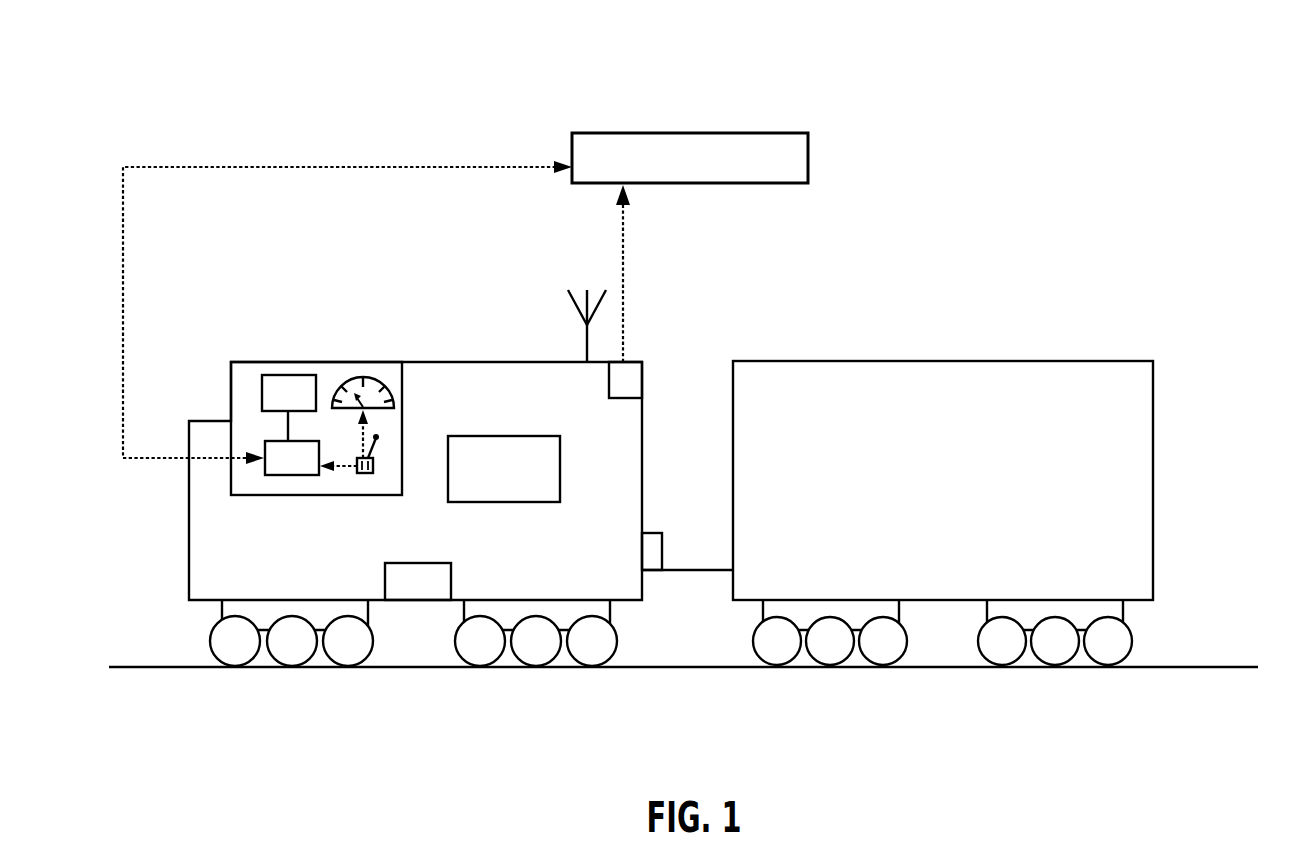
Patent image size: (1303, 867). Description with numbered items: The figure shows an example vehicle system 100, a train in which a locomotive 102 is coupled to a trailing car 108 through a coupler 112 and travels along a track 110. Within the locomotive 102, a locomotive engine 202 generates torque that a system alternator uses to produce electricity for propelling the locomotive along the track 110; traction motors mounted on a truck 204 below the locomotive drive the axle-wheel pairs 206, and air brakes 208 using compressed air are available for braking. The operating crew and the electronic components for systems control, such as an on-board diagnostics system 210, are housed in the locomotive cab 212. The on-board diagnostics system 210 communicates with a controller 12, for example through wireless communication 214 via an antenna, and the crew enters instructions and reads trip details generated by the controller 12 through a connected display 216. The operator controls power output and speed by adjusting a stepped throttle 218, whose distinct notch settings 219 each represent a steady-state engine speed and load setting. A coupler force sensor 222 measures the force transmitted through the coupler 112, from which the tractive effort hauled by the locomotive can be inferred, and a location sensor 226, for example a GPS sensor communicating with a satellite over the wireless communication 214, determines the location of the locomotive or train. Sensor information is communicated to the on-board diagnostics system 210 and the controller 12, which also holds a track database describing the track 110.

The vehicle system 100 is at (1197, 75).
The controller 12 is at (690, 158).
The locomotive 102 is at (438, 362).
The trailing car 108 is at (1048, 361).
The track 110 is at (1212, 668).
The coupler 112 is at (697, 572).
The locomotive engine 202 is at (504, 469).
The truck 204 is at (266, 648).
The axle-wheel pairs 206 is at (287, 654).
The air brakes 208 is at (410, 563).
The on-board diagnostics (OBD) system 210 is at (292, 458).
The locomotive cab 212 is at (250, 362).
The wireless communication 214 is at (585, 337).
The display 216 is at (289, 408).
The throttle 218 is at (367, 475).
The notch settings 219 is at (345, 379).
The coupler force sensor 222 is at (650, 531).
The location sensor 226 is at (633, 362).